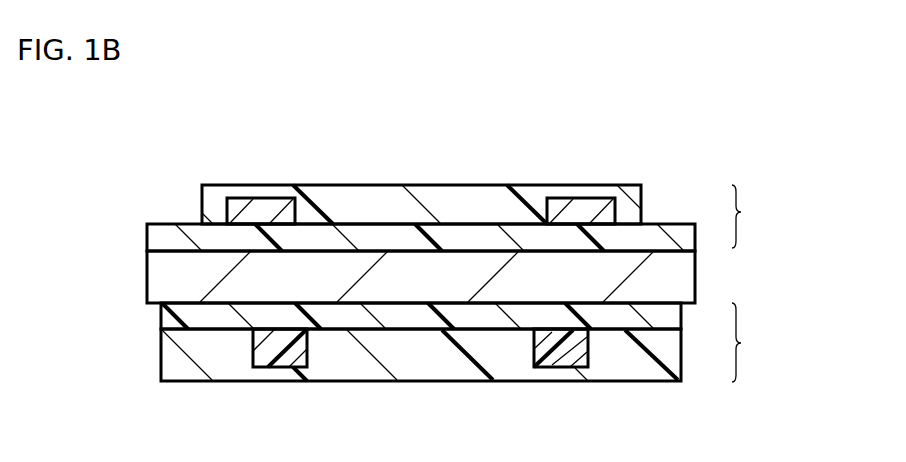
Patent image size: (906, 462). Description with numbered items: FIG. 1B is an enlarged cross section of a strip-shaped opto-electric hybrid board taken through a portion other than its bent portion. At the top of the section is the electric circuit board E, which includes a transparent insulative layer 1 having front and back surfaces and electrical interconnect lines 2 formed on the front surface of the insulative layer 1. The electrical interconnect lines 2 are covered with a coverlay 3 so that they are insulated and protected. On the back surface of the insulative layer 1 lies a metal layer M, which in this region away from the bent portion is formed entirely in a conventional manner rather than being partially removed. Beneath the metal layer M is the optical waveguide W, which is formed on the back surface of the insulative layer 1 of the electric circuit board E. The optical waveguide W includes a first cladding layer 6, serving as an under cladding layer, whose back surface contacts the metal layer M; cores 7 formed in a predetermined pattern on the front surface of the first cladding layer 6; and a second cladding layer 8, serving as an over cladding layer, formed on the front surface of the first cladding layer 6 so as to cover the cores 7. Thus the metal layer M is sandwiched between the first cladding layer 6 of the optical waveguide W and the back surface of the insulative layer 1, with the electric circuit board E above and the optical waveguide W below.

The insulative layer 1 is at (680, 238).
The electrical interconnect lines 2 is at (268, 212).
The coverlay 3 is at (440, 199).
The first cladding layer 6 is at (413, 317).
The cores 7 is at (267, 355).
The second cladding layer 8 is at (360, 368).
The electric circuit board E is at (750, 216).
The metal layer M is at (690, 273).
The optical waveguide W is at (754, 342).